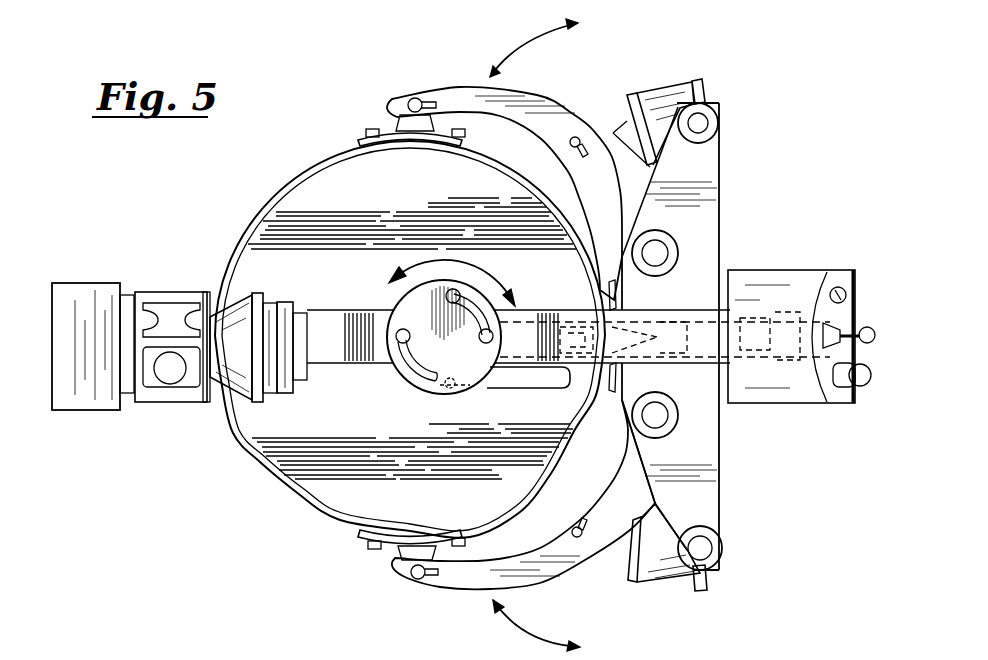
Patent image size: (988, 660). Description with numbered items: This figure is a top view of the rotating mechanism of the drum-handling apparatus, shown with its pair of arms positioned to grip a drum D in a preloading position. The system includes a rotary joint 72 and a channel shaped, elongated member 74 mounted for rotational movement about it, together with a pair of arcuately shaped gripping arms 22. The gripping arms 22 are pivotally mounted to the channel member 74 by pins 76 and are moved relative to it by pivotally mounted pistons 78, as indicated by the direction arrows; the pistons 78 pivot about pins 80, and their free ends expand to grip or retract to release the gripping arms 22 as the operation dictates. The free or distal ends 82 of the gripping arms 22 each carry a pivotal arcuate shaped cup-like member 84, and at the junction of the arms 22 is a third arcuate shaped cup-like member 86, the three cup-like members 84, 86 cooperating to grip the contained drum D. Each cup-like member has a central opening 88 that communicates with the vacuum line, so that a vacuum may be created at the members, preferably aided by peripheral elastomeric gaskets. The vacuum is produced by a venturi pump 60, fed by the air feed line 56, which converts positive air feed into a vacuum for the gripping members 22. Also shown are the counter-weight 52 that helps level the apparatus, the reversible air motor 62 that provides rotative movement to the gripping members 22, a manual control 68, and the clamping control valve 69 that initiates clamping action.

The movable gripping members 22 is at (458, 88).
The counter-weight 52 is at (50, 398).
The air feed line 56 is at (492, 392).
The venturi pump 60 is at (600, 318).
The reversible air motor 62 is at (237, 305).
The manual control 68 is at (870, 327).
The clamping control valve 69 is at (860, 388).
The rotary joint 72 is at (788, 303).
The channel shaped elongated member 74 is at (713, 413).
The pins 76 is at (673, 238).
The pistons 78 is at (655, 97).
The pins 80 is at (720, 532).
The free or distal ends 82 is at (385, 102).
The pivotal arcuate shaped cup-like members 84 is at (357, 133).
The third arcuate shaped cup-like member 86 is at (612, 395).
The central opening 88 is at (713, 137).
The drum D is at (267, 484).